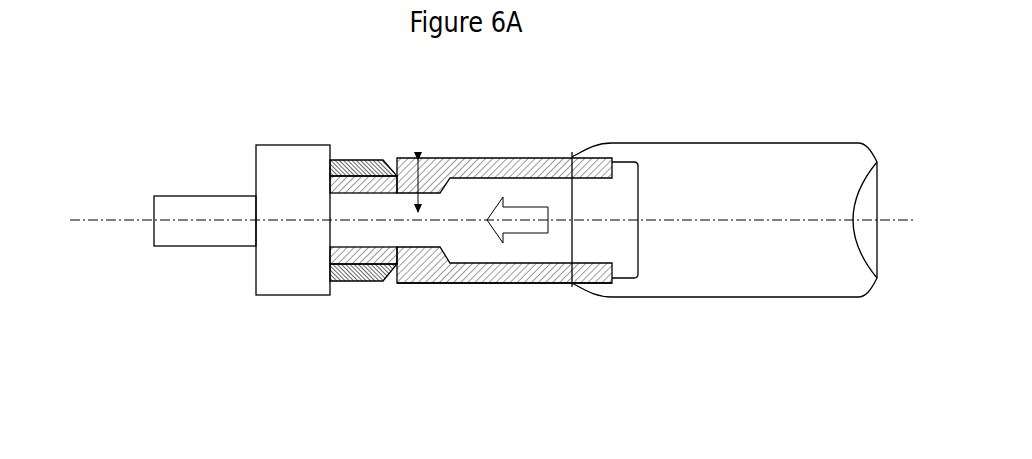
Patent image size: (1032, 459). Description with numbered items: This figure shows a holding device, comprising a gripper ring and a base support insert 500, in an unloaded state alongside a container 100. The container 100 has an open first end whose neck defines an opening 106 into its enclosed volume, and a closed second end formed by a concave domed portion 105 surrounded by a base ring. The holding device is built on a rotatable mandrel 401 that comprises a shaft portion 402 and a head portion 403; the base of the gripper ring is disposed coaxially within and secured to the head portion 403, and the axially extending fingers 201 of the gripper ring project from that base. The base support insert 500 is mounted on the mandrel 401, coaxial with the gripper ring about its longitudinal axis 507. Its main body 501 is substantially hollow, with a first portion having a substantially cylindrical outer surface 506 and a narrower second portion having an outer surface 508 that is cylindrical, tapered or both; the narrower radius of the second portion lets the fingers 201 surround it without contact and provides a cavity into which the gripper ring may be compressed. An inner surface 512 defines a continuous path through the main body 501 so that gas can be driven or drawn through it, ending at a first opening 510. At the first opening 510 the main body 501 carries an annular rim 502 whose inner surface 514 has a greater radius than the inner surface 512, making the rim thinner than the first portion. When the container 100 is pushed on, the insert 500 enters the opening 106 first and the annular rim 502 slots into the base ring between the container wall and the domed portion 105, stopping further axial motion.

The container 100 is at (743, 235).
The concave domed portion 105 is at (864, 197).
The opening 106 is at (565, 254).
The fingers 201 is at (351, 285).
The rotatable mandrel 401 is at (259, 215).
The shaft portion 402 is at (186, 235).
The head portion 403 is at (300, 158).
The base support insert 500 is at (503, 215).
The main body 501 is at (417, 277).
The annular rim 502 is at (630, 285).
The outer surface 506 is at (489, 288).
The longitudinal axis 507 is at (90, 216).
The outer surface 508 is at (346, 173).
The first opening 510 is at (647, 208).
The inner surface 512 is at (480, 182).
The inner surface 514 is at (625, 168).